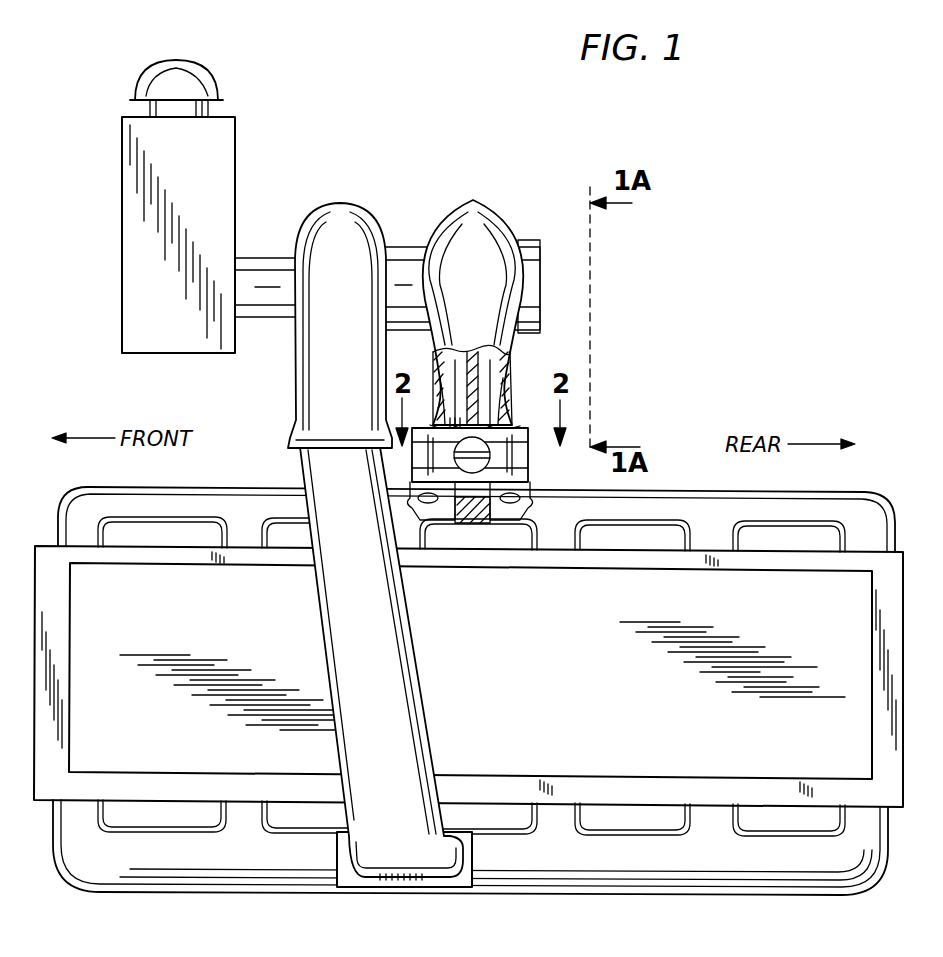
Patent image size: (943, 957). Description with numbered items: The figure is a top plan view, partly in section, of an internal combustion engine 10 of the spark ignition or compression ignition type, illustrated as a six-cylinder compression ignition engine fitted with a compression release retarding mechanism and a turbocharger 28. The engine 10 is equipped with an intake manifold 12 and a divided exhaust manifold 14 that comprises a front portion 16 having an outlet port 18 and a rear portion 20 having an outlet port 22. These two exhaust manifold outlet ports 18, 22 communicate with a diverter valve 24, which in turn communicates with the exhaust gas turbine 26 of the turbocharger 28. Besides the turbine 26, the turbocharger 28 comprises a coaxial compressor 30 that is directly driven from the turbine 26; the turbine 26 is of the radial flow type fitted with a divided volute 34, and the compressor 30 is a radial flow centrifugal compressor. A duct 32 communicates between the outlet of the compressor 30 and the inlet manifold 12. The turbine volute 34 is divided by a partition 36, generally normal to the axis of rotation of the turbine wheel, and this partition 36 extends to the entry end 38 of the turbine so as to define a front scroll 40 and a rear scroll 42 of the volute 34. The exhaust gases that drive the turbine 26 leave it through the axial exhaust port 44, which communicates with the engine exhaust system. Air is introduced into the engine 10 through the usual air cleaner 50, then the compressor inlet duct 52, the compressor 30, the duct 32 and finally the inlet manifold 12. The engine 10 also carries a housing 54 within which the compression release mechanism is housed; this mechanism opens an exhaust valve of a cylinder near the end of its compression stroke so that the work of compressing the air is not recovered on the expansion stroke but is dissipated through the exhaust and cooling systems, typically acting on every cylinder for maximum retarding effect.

The internal combustion engine 10 is at (784, 908).
The intake manifold 12 is at (691, 898).
The divided exhaust manifold 14 is at (842, 492).
The front portion 16 is at (258, 493).
The outlet port 18 is at (418, 497).
The rear portion 20 is at (686, 495).
The outlet port 22 is at (520, 498).
The diverter valve 24 is at (534, 462).
The exhaust gas turbine 26 is at (532, 272).
The turbocharger 28 is at (394, 210).
The compressor 30 is at (290, 388).
The duct 32 is at (417, 657).
The divided volute 34 is at (512, 372).
The partition 36 is at (490, 350).
The entry end 38 is at (515, 420).
The front scroll 40 is at (452, 365).
The rear scroll 42 is at (487, 372).
The axial exhaust port 44 is at (541, 300).
The air cleaner 50 is at (223, 186).
The compressor inlet duct 52 is at (263, 268).
The housing 54 is at (628, 775).